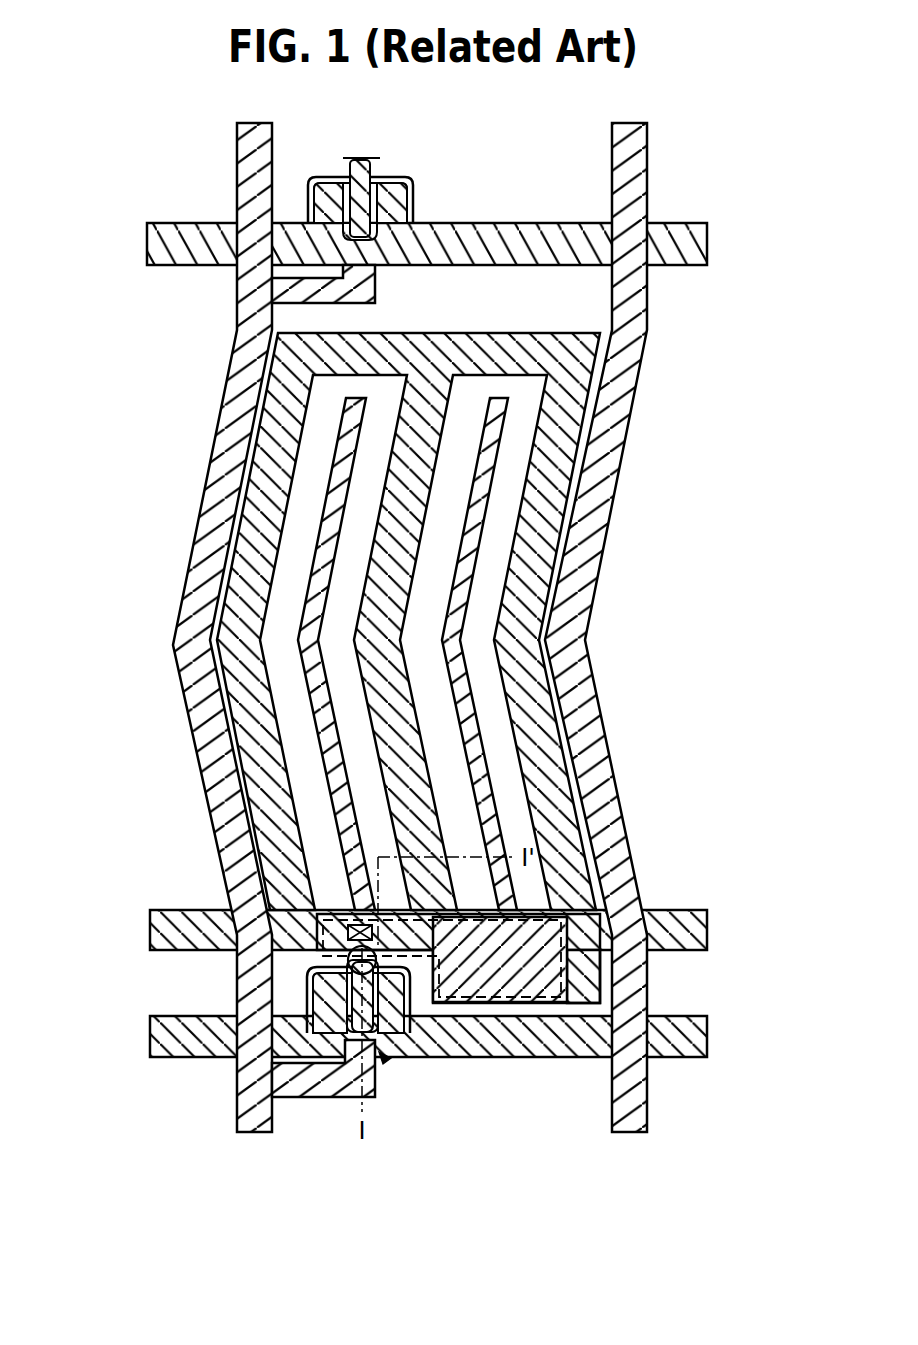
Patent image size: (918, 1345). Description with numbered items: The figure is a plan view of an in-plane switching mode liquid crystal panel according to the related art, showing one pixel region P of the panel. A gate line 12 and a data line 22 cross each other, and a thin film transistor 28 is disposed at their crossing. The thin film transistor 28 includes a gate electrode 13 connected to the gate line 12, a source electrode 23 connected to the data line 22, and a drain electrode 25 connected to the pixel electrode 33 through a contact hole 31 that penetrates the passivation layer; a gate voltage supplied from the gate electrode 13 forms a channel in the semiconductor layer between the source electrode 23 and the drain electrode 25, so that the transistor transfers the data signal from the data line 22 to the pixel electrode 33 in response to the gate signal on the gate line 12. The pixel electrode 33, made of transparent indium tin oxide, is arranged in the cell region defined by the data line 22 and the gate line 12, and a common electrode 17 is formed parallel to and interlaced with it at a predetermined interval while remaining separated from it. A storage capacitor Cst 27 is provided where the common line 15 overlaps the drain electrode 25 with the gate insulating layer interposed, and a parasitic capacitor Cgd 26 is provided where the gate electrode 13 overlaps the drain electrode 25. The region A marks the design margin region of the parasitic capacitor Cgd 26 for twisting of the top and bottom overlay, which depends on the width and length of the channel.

The gate line 12 is at (150, 1035).
The gate electrode 13 is at (430, 1003).
The common line 15 is at (710, 928).
The common electrode 17 is at (540, 650).
The data line 22 is at (197, 710).
The source electrode 23 is at (306, 1040).
The drain electrode 25 is at (413, 1000).
The parasitic capacitor Cgd 26 is at (340, 1023).
The storage capacitor Cst 27 is at (527, 1012).
The thin film transistor 28 is at (385, 1062).
The contact hole 31 is at (365, 912).
The pixel electrode 33 is at (478, 503).
The region A is at (348, 960).
The pixel P is at (673, 422).